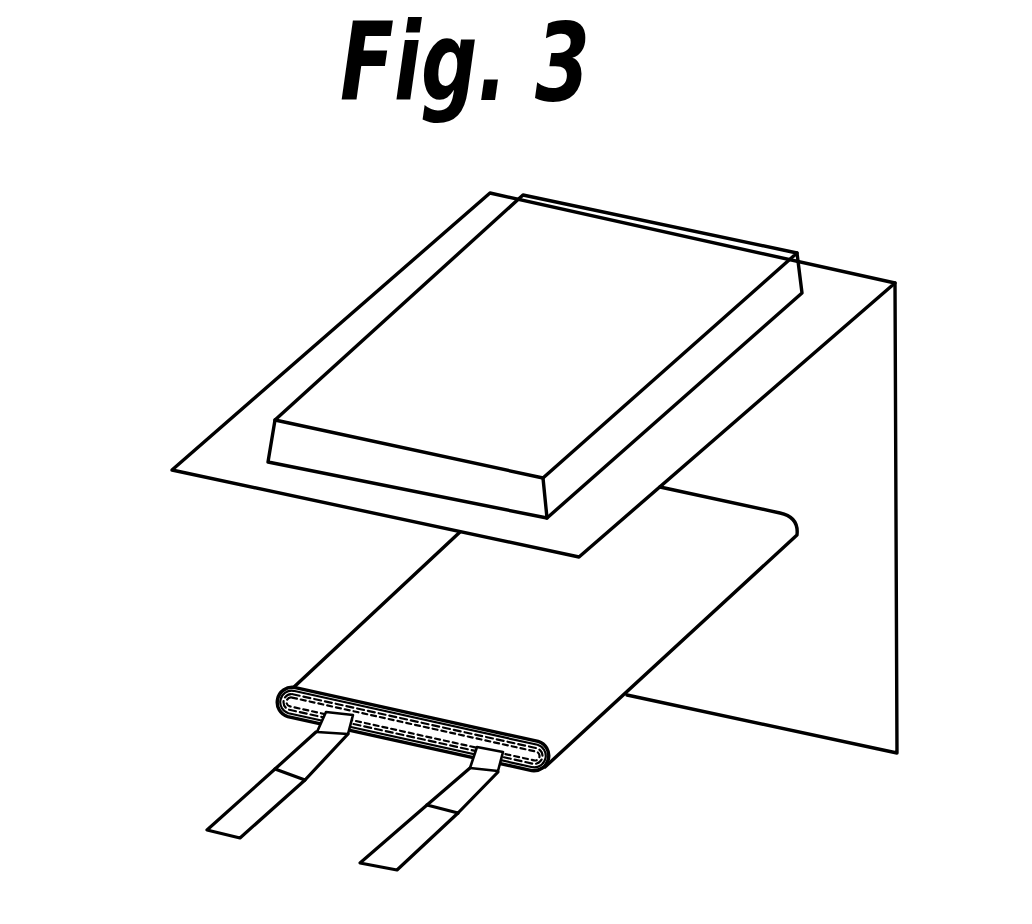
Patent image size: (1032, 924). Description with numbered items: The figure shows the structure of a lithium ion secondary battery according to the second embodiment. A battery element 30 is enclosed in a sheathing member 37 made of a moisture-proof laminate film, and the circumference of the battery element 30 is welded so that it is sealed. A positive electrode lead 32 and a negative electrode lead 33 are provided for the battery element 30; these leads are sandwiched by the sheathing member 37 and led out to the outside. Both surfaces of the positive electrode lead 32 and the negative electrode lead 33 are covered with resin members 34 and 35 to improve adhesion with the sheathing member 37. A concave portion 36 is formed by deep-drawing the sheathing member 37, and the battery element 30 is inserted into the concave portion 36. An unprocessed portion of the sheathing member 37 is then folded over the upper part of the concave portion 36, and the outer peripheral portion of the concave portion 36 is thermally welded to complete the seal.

The battery element 30 is at (322, 654).
The positive electrode lead 32 is at (365, 857).
The negative electrode lead 33 is at (217, 817).
The resin member 34 is at (433, 792).
The resin member 35 is at (293, 752).
The concave portion 36 is at (484, 262).
The sheathing member 37 is at (318, 343).